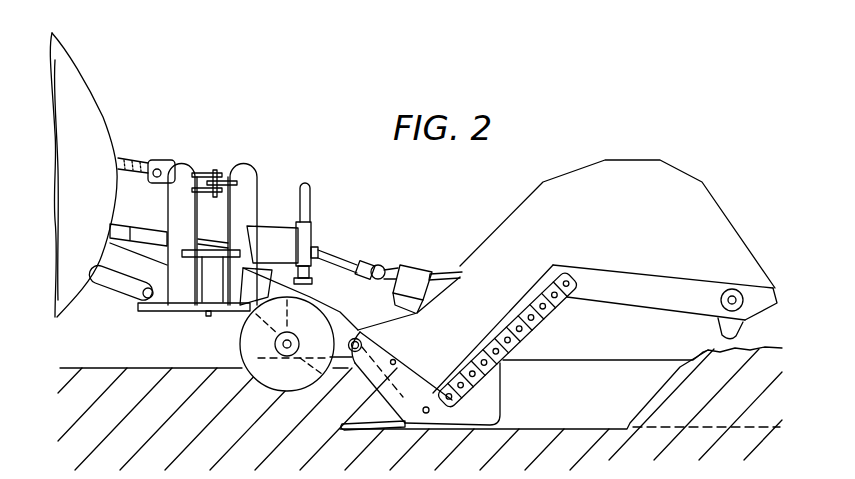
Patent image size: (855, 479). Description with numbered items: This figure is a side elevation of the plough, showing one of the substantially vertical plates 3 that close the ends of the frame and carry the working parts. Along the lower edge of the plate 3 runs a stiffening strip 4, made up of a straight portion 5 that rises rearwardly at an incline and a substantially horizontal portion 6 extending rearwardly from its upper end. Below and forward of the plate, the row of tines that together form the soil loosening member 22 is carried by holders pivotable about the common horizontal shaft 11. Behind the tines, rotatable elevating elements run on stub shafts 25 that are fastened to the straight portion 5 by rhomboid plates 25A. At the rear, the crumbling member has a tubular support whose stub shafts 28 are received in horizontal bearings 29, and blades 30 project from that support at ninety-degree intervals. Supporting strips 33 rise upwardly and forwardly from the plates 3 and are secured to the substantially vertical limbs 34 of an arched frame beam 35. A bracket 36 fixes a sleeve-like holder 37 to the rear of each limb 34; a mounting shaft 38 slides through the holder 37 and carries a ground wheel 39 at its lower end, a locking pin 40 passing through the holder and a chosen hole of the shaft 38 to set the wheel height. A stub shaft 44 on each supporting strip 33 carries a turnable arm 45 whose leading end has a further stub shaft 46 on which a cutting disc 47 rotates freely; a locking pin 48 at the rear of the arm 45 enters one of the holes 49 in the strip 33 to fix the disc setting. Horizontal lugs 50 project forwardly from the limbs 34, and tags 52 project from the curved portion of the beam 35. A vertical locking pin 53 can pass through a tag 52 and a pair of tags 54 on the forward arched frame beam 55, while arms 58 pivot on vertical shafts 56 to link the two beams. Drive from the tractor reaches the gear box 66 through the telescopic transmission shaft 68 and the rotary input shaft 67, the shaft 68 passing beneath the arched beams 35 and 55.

The vertical plate 3 is at (577, 177).
The stiffening strip 4 is at (622, 268).
The straight portion 5 is at (522, 291).
The horizontal portion 6 is at (660, 287).
The shaft 11 is at (425, 414).
The soil loosening member 22 is at (360, 437).
The stub shaft 25 is at (538, 321).
The rhomboid plate 25A is at (530, 333).
The stub shaft 28 is at (720, 299).
The horizontal bearing 29 is at (745, 276).
The blade 30 is at (722, 331).
The supporting strip 33 is at (441, 372).
The limb 34 is at (233, 313).
The arched frame beam 35 is at (262, 181).
The bracket 36 is at (272, 230).
The sleeve-like holder 37 is at (313, 232).
The mounting shaft 38 is at (312, 191).
The ground wheel 39 is at (329, 298).
The locking pin 40 is at (326, 251).
The stub shaft 44 is at (356, 352).
The arm 45 is at (347, 353).
The stub shaft 46 is at (286, 349).
The cutting disc 47 is at (258, 364).
The locking pin 48 is at (389, 379).
The hole 49 is at (396, 359).
The lug 50 is at (190, 350).
The tag 52 is at (249, 176).
The locking pin 53 is at (217, 178).
The tag 54 is at (205, 172).
The arched frame beam 55 is at (166, 209).
The vertical shaft 56 is at (209, 248).
The arm 58 is at (205, 289).
The gear box 66 is at (425, 265).
The rotary input shaft 67 is at (387, 267).
The intermediate telescopic transmission shaft 68 is at (361, 262).